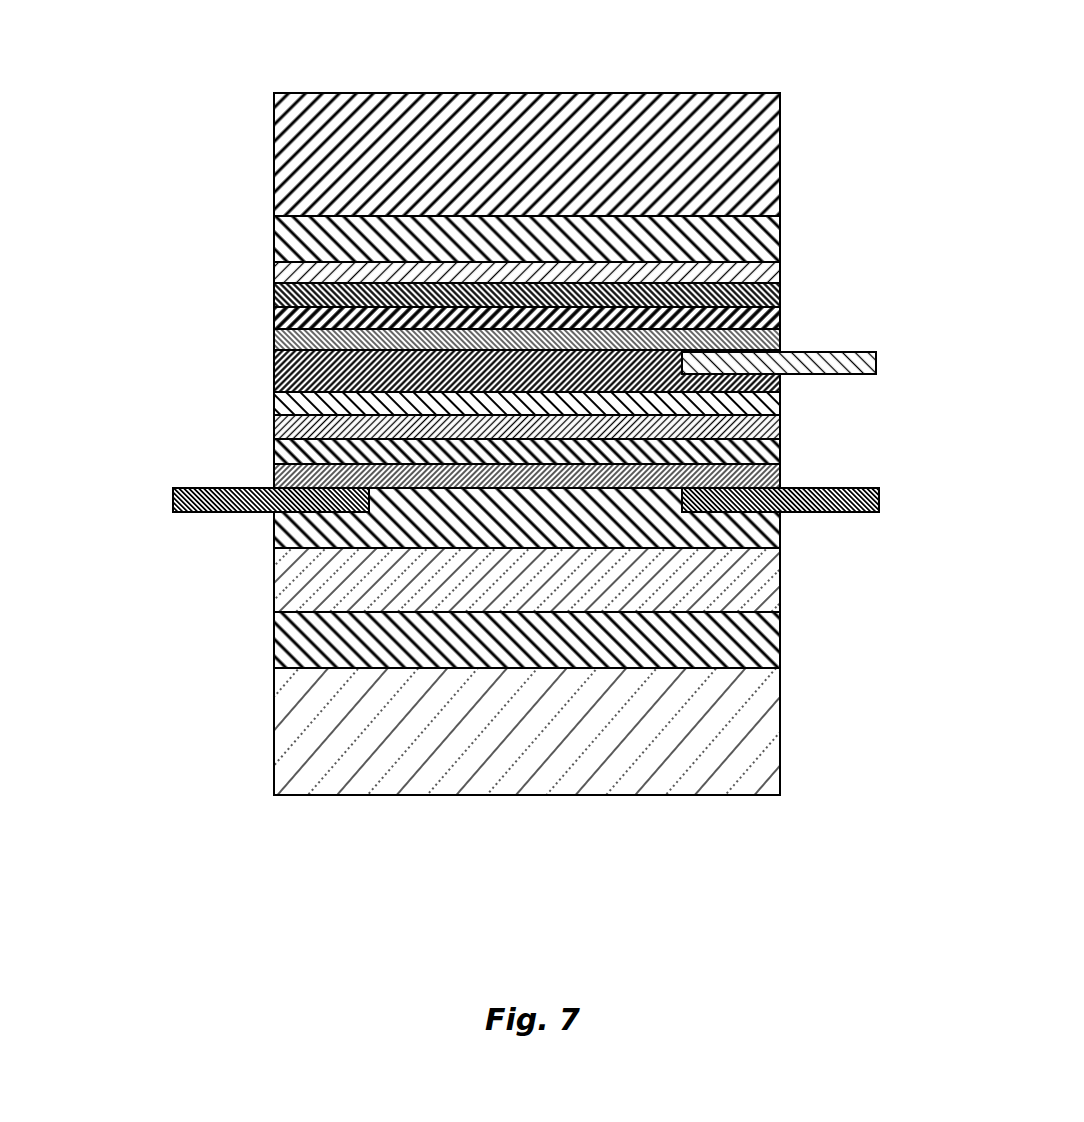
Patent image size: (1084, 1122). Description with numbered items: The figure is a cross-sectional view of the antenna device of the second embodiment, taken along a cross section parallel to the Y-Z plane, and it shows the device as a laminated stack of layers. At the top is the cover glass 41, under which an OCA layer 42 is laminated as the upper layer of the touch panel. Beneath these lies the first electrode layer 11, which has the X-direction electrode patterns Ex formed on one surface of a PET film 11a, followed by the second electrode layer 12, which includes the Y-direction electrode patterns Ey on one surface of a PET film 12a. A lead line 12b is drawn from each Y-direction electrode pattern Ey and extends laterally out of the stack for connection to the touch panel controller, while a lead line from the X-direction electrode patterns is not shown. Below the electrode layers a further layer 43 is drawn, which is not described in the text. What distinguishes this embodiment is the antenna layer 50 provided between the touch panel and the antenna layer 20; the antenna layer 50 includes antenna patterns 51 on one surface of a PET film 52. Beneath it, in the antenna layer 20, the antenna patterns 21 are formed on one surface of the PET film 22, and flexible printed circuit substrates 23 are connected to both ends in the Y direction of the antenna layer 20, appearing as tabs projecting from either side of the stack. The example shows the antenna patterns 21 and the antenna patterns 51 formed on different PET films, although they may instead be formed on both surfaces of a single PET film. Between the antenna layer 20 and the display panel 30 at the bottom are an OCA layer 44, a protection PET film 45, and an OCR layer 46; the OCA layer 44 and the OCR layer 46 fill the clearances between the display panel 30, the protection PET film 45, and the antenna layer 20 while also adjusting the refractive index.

The cover glass 41 is at (722, 103).
The OCA layer 42 is at (273, 236).
The first electrode layer 11 is at (82, 242).
The X-direction electrode patterns Ex is at (273, 272).
The PET film 11a is at (273, 297).
The second electrode layer 12 is at (82, 315).
The PET film 12a is at (273, 313).
The Y-direction electrode patterns Ey is at (273, 340).
The lead line 12b is at (858, 356).
The insulating layer 43 is at (273, 372).
The antenna layer 50 is at (88, 423).
The antenna patterns 51 is at (273, 405).
The PET film 52 is at (273, 430).
The antenna layer 20 is at (922, 428).
The PET film 22 is at (780, 446).
The antenna patterns 21 is at (780, 476).
The flexible printed circuit substrates 23 is at (172, 498).
The OCA layer 44 is at (273, 532).
The protection PET film 45 is at (273, 580).
The OCR layer 46 is at (273, 638).
The display panel 30 is at (523, 783).